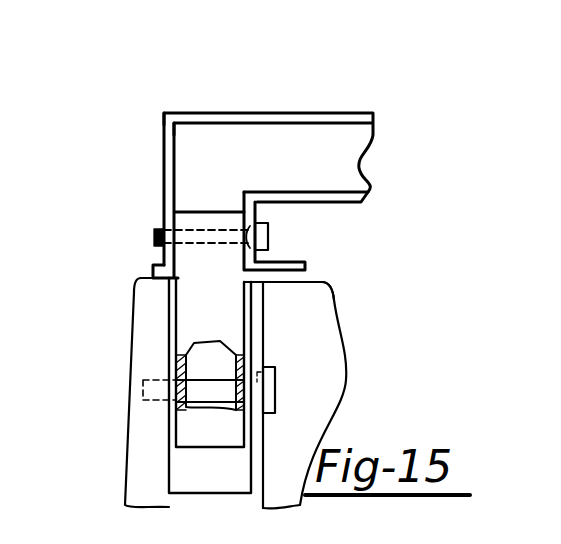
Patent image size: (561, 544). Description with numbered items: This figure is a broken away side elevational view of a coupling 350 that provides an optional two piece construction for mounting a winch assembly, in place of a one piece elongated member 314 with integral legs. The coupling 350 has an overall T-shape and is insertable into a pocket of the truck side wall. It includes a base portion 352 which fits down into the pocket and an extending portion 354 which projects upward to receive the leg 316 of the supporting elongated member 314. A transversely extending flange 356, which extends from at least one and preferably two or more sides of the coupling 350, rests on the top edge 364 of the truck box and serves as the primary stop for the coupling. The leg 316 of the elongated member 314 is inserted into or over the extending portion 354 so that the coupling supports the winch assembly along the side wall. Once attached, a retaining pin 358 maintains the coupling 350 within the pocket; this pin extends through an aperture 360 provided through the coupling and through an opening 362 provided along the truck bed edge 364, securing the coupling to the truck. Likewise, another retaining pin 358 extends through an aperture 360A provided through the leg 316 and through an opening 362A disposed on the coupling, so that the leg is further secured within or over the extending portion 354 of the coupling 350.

The elongated member 314 is at (268, 113).
The extending leg 316 is at (168, 143).
The coupling 350 is at (180, 311).
The base portion 352 is at (190, 472).
The extending portion 354 is at (196, 263).
The transversely extending flange 356 is at (295, 262).
The retaining pin 358 is at (160, 228).
The aperture 360 is at (176, 368).
The aperture 360A is at (258, 219).
The opening 362 is at (265, 368).
The opening 362A is at (254, 237).
The top edge of truck box 364 is at (320, 282).